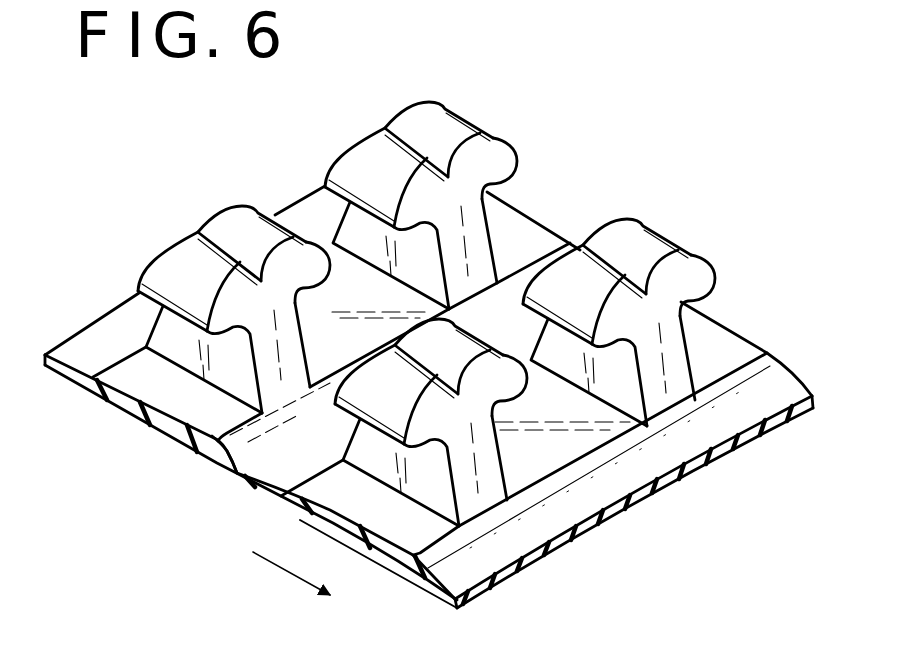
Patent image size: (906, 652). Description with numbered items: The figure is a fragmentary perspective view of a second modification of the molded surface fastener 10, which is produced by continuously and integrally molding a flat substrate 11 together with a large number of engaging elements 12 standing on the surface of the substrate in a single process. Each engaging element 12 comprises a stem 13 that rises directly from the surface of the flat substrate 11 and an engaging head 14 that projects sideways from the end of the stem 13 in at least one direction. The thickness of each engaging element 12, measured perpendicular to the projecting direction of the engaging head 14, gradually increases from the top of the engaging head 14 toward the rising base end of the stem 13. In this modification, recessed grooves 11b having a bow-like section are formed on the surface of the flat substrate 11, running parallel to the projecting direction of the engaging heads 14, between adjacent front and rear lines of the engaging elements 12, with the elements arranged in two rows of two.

The molded surface fastener 10 is at (243, 170).
The flat substrate 11 is at (722, 343).
The recessed grooves 11b is at (262, 466).
The engaging element 12 is at (467, 108).
The stem 13 is at (475, 234).
The engaging head 14 is at (500, 155).